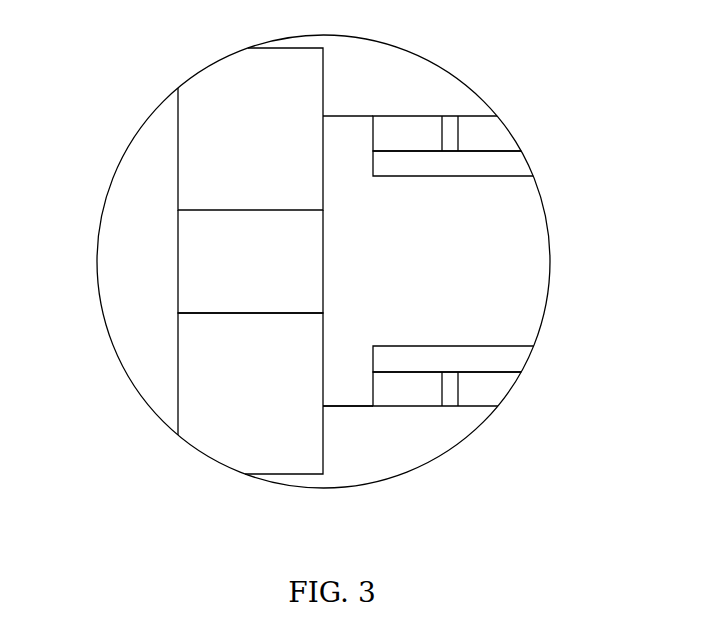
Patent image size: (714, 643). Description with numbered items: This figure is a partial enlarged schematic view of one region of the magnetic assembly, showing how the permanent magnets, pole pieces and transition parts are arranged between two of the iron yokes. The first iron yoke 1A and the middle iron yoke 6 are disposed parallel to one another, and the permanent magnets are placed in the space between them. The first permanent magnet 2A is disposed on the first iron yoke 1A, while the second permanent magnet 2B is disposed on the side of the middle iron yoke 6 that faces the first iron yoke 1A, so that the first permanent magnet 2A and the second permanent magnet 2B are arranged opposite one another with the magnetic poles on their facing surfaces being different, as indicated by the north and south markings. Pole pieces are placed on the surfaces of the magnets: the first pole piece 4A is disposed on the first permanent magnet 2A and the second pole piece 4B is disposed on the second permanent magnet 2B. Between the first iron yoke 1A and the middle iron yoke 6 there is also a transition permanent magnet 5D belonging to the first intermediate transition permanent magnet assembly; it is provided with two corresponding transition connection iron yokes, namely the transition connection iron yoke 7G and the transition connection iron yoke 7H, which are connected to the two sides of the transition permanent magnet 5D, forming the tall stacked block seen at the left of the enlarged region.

The first iron yoke 1A is at (430, 82).
The first permanent magnet 2A is at (506, 132).
The first pole piece 4A is at (515, 167).
The second pole piece 4B is at (518, 346).
The second permanent magnet 2B is at (508, 394).
The middle iron yoke 6 is at (416, 440).
The transition connection iron yoke 7H is at (205, 163).
The transition permanent magnet 5D is at (187, 270).
The transition connection iron yoke 7G is at (194, 392).